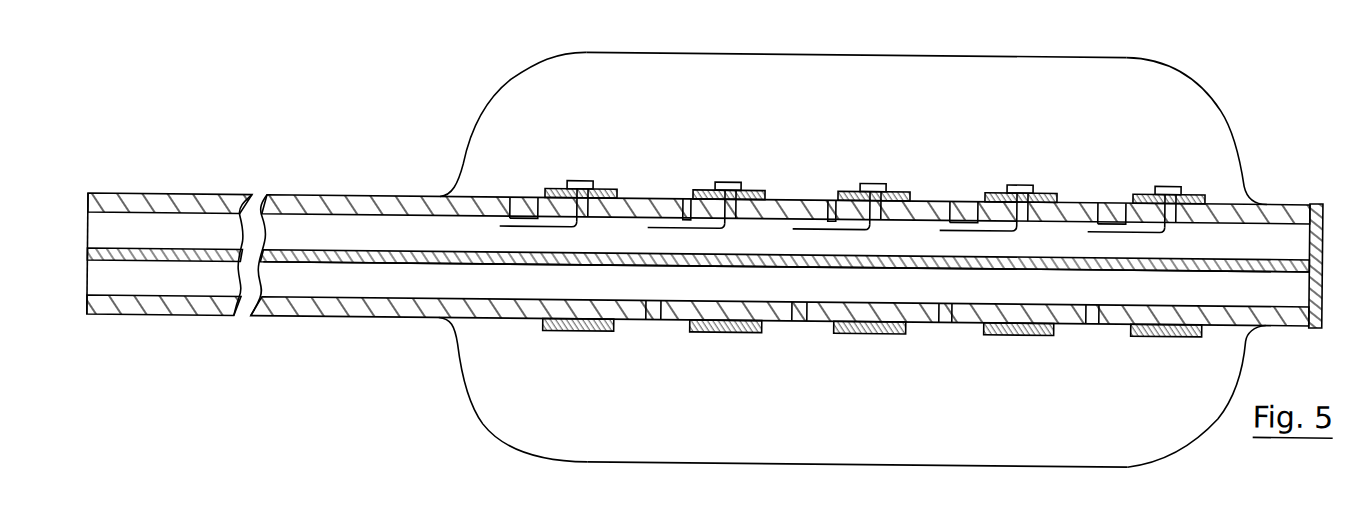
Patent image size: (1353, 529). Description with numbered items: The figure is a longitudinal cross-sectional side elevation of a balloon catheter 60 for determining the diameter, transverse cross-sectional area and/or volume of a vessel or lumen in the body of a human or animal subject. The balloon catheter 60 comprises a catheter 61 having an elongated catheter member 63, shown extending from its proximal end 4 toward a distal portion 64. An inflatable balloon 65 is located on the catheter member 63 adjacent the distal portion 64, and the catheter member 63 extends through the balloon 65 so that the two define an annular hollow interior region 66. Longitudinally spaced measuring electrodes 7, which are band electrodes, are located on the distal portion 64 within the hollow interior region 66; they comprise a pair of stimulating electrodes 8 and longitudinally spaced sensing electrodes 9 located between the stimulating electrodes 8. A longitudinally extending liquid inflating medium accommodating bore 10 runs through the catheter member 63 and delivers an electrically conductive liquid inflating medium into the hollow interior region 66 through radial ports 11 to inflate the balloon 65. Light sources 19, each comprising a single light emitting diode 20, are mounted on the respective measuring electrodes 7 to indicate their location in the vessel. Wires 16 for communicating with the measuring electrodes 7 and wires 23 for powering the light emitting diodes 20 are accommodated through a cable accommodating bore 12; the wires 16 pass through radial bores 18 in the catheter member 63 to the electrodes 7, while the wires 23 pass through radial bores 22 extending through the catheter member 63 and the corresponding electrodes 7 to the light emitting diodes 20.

The proximal end 4 is at (89, 195).
The measuring electrodes 7 is at (605, 184).
The stimulating electrodes 8 is at (558, 184).
The sensing electrodes 9 is at (707, 193).
The liquid inflating medium accommodating bore 10 is at (523, 273).
The radial ports 11 is at (654, 314).
The cable accommodating bore 12 is at (341, 227).
The wires 16 is at (512, 193).
The radial bores 18 is at (530, 193).
The light sources 19 is at (590, 176).
The light emitting diodes 20 is at (571, 176).
The radial bores 22 is at (595, 198).
The wires 23 is at (498, 226).
The balloon catheter 60 is at (1226, 75).
The catheter 61 is at (399, 307).
The catheter member 63 is at (380, 197).
The distal portion 64 is at (828, 308).
The inflatable balloon 65 is at (913, 48).
The annular hollow interior region 66 is at (1021, 83).